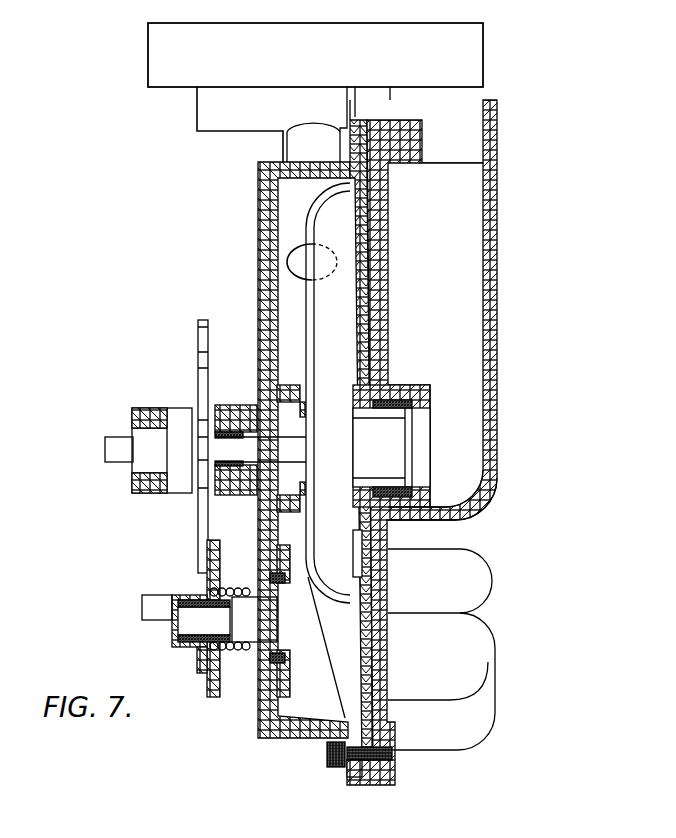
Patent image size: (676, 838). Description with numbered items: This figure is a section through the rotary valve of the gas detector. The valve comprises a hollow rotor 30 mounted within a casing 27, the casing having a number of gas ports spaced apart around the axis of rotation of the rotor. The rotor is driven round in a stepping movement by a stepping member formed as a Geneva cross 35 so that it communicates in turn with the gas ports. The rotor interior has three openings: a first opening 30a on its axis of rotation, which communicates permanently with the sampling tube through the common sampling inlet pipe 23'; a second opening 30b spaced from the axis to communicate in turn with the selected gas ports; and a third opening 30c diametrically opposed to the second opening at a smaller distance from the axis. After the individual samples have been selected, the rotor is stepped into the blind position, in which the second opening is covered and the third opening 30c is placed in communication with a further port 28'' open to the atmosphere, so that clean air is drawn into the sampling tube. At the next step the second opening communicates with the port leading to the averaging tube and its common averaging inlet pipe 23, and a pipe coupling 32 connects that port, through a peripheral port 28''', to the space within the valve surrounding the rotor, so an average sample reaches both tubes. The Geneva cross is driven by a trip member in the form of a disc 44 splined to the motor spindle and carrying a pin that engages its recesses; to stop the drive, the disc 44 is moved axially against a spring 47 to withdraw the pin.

The sampling inlet pipe 23' is at (295, 55).
The averaging inlet pipe 23 is at (270, 124).
The pipe coupling 32 is at (300, 145).
The casing 27 is at (265, 172).
The rotor 30 is at (315, 208).
The peripheral port 28''' is at (275, 262).
The second opening 30b is at (363, 240).
The Geneva cross 35 is at (198, 398).
The first opening 30a is at (393, 442).
The third opening 30c is at (358, 565).
The further port 28'' is at (438, 508).
The disc 44 is at (205, 679).
The spring 47 is at (238, 652).